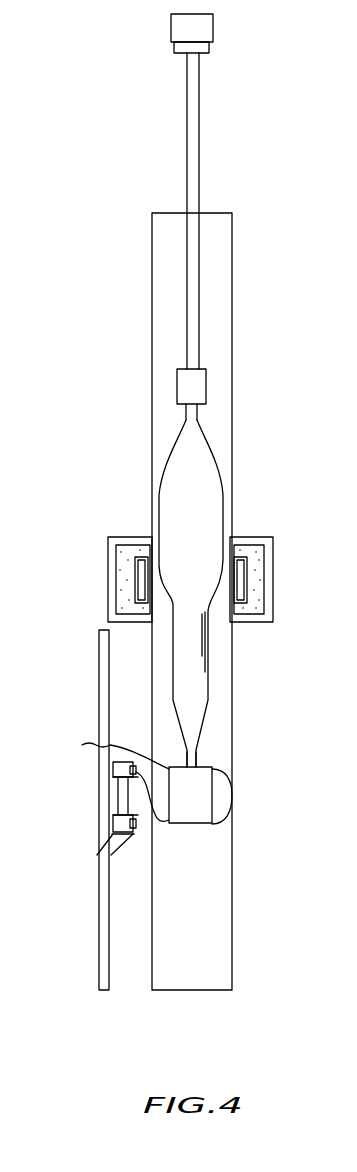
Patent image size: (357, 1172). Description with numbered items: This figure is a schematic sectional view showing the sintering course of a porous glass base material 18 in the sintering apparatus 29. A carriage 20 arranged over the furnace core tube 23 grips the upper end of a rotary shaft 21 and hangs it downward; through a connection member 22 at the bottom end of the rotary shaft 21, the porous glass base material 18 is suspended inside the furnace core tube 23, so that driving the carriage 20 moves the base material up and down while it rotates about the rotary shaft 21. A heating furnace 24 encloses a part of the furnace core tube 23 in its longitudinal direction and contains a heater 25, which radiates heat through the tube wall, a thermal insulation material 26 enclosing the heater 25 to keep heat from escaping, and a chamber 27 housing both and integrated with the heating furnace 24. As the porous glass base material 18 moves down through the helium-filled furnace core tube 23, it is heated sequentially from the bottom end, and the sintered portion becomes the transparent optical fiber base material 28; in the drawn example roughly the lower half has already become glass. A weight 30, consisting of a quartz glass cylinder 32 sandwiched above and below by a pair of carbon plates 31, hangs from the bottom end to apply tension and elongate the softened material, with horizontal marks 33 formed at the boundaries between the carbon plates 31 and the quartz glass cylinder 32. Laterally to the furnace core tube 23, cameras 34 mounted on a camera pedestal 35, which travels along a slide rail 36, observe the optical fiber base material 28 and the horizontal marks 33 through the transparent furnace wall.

The sintering apparatus 29 is at (60, 31).
The carriage 20 is at (213, 30).
The rotary shaft 21 is at (199, 185).
The connection member 22 is at (205, 373).
The furnace core tube 23 is at (151, 441).
The porous glass base material 18 is at (225, 527).
The optical fiber base material 28 is at (208, 692).
The heating furnace 24 is at (119, 528).
The chamber 27 is at (262, 537).
The thermal insulation material 26 is at (258, 573).
The heater 25 is at (247, 597).
The weight 30 is at (248, 802).
The quartz glass cylinder 32 is at (205, 797).
The carbon plates 31 is at (228, 808).
The horizontal marks 33 is at (112, 778).
The cameras 34 is at (112, 767).
The camera pedestal 35 is at (113, 838).
The slide rail 36 is at (98, 960).